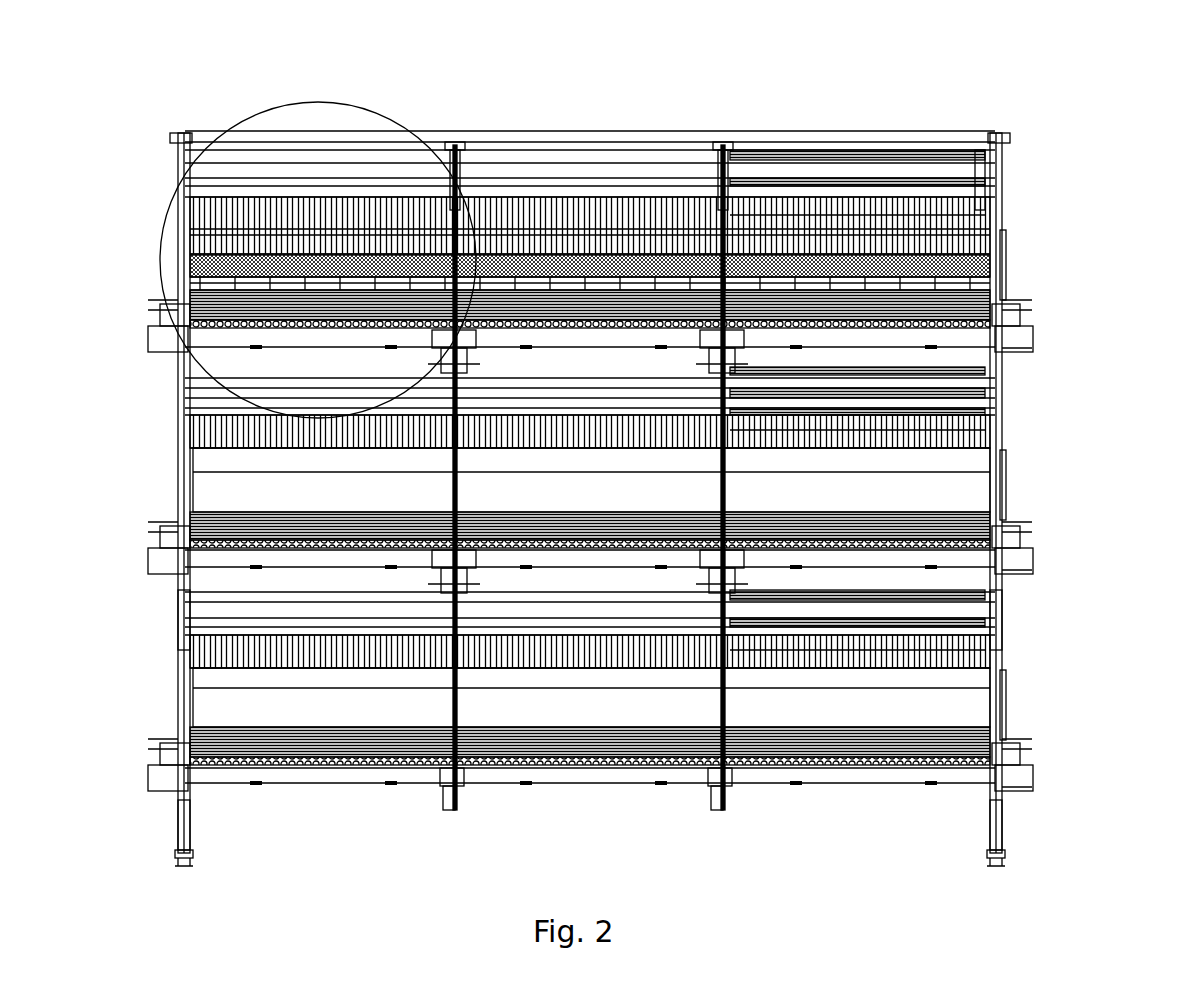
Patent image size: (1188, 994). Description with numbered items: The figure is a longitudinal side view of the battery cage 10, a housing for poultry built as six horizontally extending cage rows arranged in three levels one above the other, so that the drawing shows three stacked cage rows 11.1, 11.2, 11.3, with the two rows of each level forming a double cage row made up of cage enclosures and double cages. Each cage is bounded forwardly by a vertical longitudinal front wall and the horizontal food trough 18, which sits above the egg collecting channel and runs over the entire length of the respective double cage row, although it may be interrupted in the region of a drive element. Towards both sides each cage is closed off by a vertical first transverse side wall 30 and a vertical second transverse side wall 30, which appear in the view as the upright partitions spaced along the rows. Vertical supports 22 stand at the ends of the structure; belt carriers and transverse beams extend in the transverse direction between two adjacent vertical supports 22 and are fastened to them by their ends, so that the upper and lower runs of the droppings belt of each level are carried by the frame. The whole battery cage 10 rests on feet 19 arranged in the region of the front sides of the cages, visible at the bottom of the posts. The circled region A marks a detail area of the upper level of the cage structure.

The battery cage 10 is at (1088, 172).
The cage row 11.1 is at (1040, 664).
The cage row 11.2 is at (1040, 436).
The cage row 11.3 is at (1040, 222).
The food trough 18 is at (980, 486).
The feet 19 is at (175, 852).
The vertical support 22 is at (995, 602).
The transverse side wall 30 is at (482, 150).
The detail region A is at (158, 232).